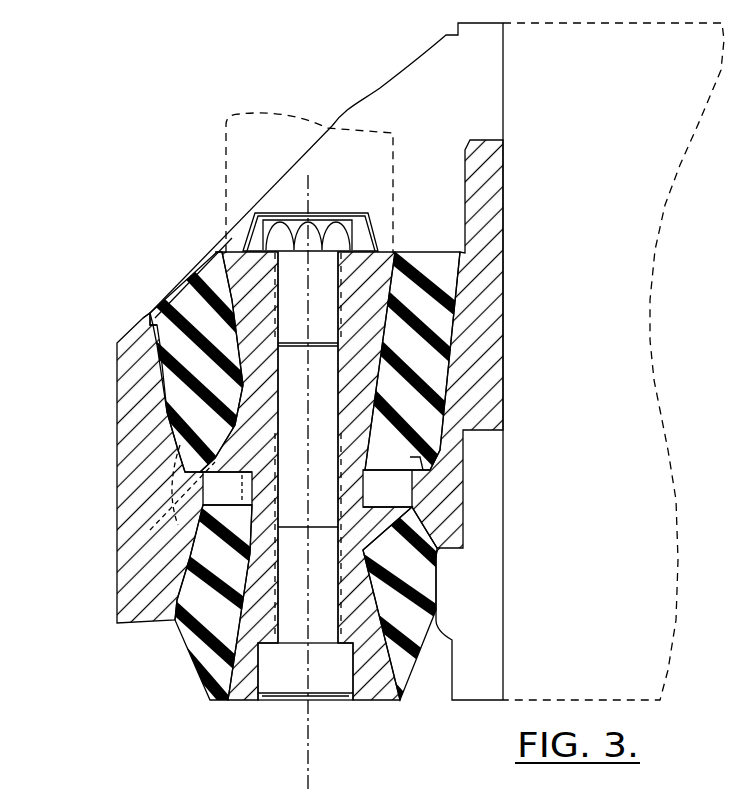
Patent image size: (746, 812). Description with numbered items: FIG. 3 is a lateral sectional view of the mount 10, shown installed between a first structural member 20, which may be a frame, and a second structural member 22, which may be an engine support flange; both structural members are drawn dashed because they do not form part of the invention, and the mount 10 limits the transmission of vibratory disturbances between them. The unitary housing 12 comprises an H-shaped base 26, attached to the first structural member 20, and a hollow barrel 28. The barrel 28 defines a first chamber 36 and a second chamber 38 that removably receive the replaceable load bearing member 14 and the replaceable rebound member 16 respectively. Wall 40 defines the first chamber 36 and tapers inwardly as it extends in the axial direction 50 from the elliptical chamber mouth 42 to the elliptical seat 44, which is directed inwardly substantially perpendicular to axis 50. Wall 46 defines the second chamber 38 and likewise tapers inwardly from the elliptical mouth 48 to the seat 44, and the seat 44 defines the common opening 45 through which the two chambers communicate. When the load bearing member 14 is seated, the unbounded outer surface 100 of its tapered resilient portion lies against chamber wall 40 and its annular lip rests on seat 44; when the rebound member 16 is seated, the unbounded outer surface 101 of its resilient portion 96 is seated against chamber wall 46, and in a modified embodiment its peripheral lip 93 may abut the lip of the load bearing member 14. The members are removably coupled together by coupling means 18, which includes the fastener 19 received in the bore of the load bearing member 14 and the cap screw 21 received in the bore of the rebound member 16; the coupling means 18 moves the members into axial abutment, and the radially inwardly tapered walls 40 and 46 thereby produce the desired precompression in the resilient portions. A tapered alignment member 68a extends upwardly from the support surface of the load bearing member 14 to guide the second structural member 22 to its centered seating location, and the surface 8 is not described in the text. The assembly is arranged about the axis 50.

The bore surface 8 is at (106, 555).
The mount 10 is at (84, 511).
The housing 12 is at (112, 658).
The replaceable load bearing member 14 is at (183, 278).
The replaceable rebound member 16 is at (427, 696).
The coupling means 18 is at (288, 718).
The fastener 19 is at (290, 213).
The first structural member 20 is at (613, 361).
The cap screw 21 is at (321, 721).
The second structural member 22 is at (257, 112).
The H-shaped base 26 is at (503, 286).
The hollow barrel 28 is at (125, 432).
The first chamber 36 is at (185, 437).
The second chamber 38 is at (203, 505).
The wall 40 is at (175, 388).
The elliptical chamber mouth 42 is at (152, 318).
The elliptical seat 44 is at (203, 471).
The opening 45 is at (203, 472).
The wall 46 is at (118, 620).
The elliptical mouth 48 is at (200, 608).
The axis 50 is at (341, 482).
The alignment member 68a is at (363, 195).
The peripheral lip 93 is at (474, 464).
The resilient portion 96 is at (187, 572).
The unbounded outer surface 100 is at (163, 400).
The unbounded outer surface 101 is at (180, 580).